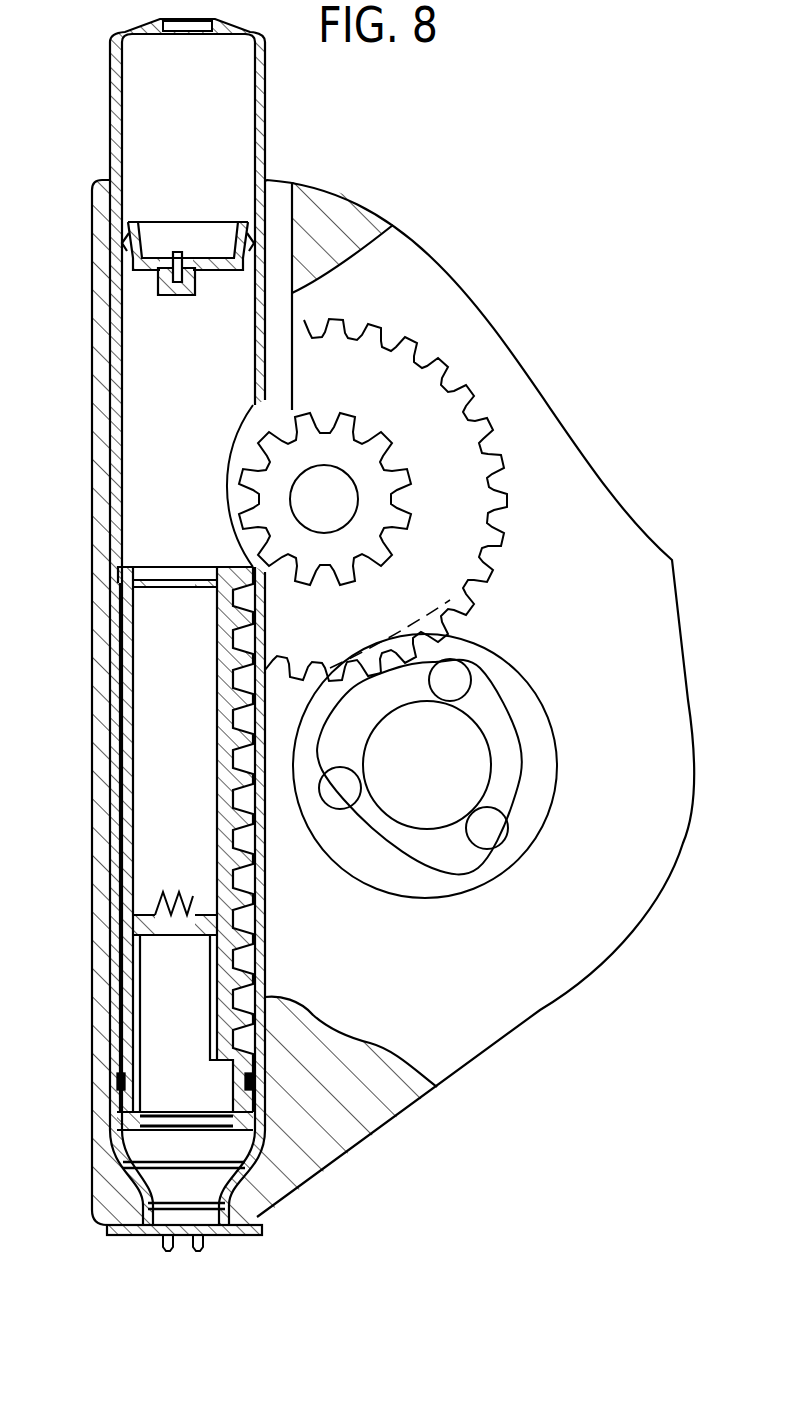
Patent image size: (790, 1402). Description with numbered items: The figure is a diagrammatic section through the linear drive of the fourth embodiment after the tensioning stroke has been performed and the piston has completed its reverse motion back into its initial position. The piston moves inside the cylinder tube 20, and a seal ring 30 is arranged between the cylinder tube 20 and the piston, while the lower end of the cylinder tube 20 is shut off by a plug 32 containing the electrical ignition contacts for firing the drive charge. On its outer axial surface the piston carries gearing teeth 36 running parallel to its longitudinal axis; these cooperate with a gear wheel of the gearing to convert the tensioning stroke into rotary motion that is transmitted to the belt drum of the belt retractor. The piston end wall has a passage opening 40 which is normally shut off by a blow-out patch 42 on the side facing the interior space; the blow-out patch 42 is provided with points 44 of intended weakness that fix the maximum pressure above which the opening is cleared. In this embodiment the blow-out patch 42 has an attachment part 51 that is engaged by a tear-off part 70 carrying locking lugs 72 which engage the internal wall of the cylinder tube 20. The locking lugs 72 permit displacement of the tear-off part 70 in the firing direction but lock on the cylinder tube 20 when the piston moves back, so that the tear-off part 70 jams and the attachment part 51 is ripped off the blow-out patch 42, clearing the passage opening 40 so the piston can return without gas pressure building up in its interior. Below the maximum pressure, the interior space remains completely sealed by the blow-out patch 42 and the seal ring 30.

The cylinder tube 20 is at (112, 96).
The tear-off part 70 is at (205, 232).
The locking lugs 72 is at (124, 243).
The attachment part 51 is at (163, 284).
The blow-out patch 42 is at (140, 568).
The passage opening 40 is at (178, 567).
The points of intended weakness 44 is at (187, 589).
The gearing teeth 36 is at (258, 950).
The seal ring 30 is at (114, 1082).
The plug 32 is at (148, 1178).